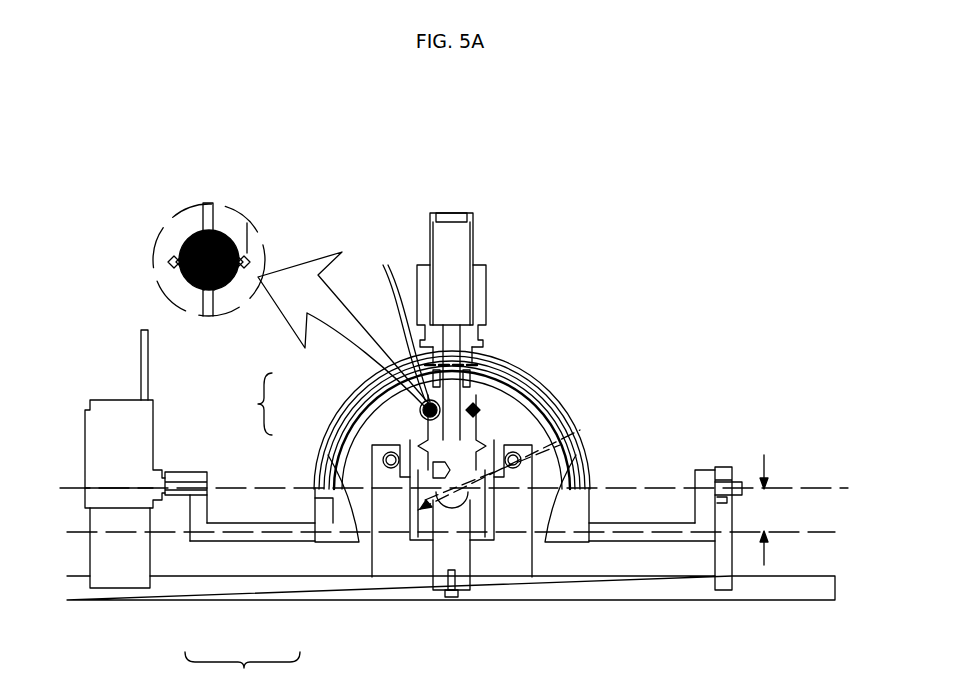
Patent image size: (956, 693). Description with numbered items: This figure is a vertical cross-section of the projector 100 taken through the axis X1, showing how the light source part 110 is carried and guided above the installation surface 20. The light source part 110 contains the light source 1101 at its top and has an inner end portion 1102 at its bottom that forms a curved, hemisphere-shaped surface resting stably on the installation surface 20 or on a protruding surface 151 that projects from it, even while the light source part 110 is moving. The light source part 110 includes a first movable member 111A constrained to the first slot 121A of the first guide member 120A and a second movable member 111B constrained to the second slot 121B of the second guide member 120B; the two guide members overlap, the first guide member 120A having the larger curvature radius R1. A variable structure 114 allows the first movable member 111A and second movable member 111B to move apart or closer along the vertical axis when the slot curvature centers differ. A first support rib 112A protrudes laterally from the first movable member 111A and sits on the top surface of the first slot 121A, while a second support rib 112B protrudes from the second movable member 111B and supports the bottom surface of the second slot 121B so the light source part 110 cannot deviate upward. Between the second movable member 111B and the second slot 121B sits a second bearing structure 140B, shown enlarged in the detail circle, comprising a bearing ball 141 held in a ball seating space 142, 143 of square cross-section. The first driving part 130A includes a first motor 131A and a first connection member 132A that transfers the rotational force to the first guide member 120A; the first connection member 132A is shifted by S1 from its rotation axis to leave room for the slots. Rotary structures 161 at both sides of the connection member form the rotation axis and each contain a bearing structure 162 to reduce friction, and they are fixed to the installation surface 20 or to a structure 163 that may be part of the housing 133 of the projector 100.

The projector 100 is at (100, 197).
The installation surface 20 is at (332, 597).
The light source part 110 is at (481, 238).
The light source 1101 is at (460, 213).
The inner end portion 1102 is at (428, 512).
The first movable member 111A is at (480, 288).
The second movable member 111B is at (468, 400).
The first support rib 112A is at (478, 341).
The second support rib 112B is at (483, 425).
The variable structure 114 is at (397, 322).
The first guide member 120A is at (547, 373).
The second guide member 120B is at (496, 493).
The first slot 121A is at (378, 368).
The second slot 121B is at (504, 377).
The first driving part 130A is at (242, 672).
The first motor 131A is at (132, 484).
The first connection member 132A is at (270, 545).
The housing 133 is at (328, 482).
The structure 163 is at (117, 588).
The second bearing structure 140B is at (366, 475).
The bearing ball 141 is at (190, 240).
The ball seating space 142 is at (172, 262).
The ball seating space 143 is at (245, 258).
The protruding surface 151 is at (466, 597).
The rotary structure 161 is at (190, 470).
The bearing structure 162 is at (725, 497).
The curvature radius R1 is at (582, 458).
The shift S1 is at (782, 459).
The axis X1 is at (439, 505).